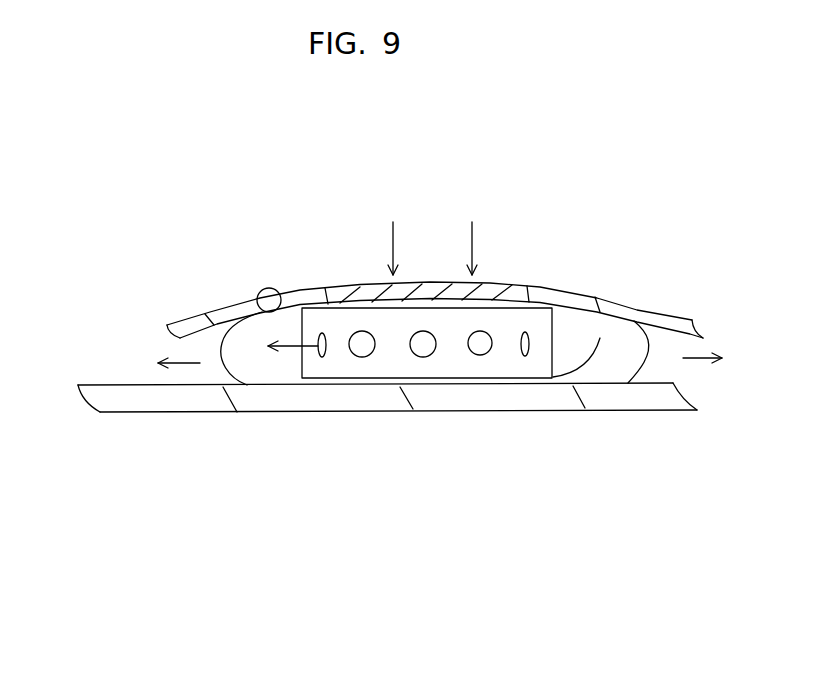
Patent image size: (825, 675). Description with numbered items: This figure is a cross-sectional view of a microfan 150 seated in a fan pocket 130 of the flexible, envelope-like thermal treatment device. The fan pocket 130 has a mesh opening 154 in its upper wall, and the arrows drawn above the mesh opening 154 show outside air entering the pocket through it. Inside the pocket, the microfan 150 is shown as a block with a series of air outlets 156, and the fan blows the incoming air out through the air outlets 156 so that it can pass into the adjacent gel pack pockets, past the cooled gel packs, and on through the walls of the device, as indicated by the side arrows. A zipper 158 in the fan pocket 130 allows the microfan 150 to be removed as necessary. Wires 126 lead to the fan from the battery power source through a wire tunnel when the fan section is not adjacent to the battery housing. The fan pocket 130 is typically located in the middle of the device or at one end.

The wires 126 is at (597, 345).
The fan pocket 130 is at (300, 450).
The microfan 150 is at (430, 352).
The mesh opening 154 is at (371, 282).
The air outlets 156 is at (487, 351).
The zipper 158 is at (258, 293).